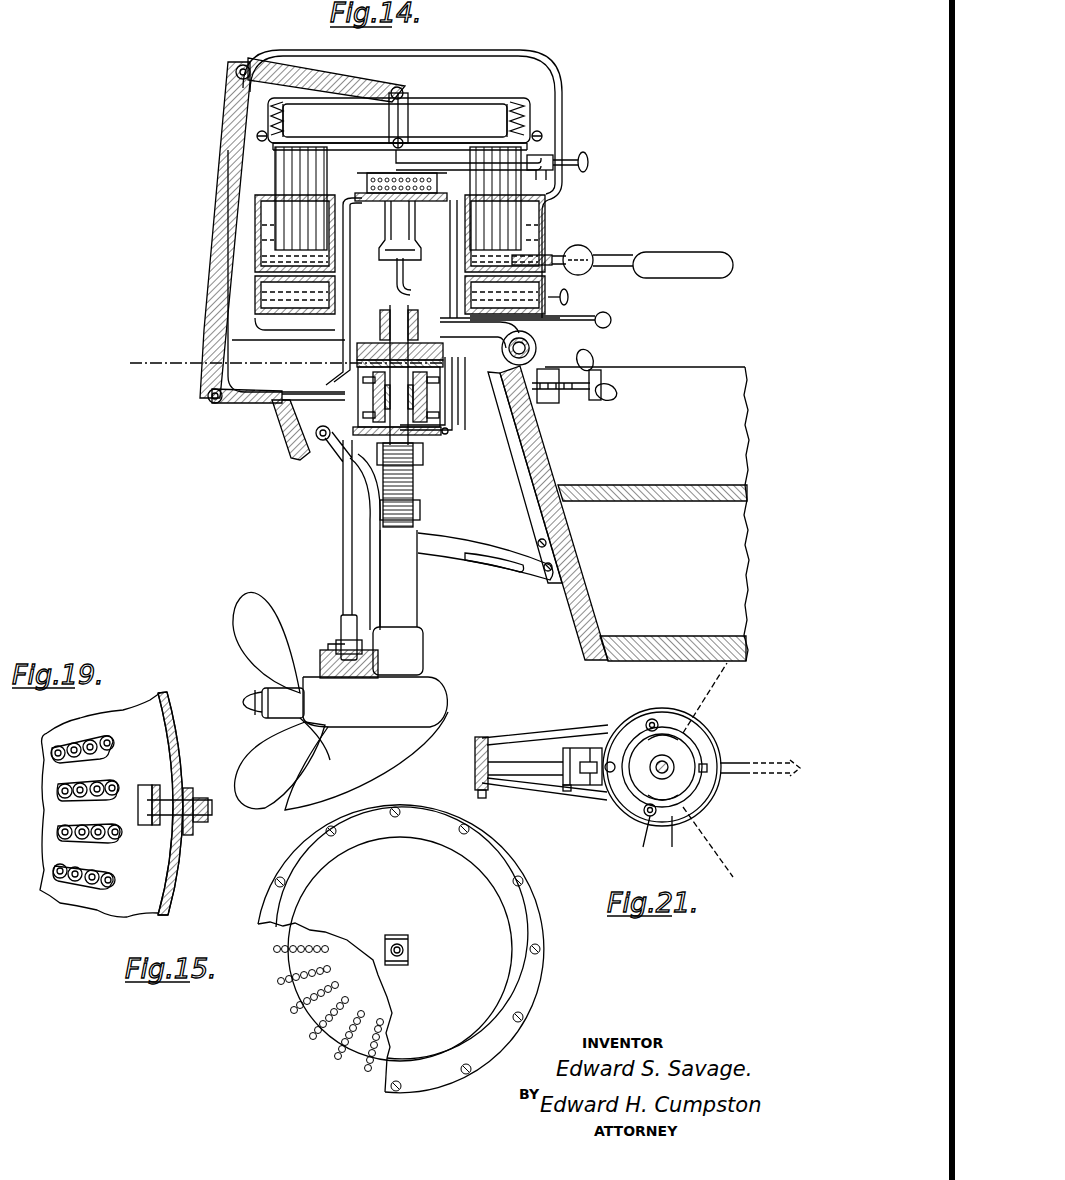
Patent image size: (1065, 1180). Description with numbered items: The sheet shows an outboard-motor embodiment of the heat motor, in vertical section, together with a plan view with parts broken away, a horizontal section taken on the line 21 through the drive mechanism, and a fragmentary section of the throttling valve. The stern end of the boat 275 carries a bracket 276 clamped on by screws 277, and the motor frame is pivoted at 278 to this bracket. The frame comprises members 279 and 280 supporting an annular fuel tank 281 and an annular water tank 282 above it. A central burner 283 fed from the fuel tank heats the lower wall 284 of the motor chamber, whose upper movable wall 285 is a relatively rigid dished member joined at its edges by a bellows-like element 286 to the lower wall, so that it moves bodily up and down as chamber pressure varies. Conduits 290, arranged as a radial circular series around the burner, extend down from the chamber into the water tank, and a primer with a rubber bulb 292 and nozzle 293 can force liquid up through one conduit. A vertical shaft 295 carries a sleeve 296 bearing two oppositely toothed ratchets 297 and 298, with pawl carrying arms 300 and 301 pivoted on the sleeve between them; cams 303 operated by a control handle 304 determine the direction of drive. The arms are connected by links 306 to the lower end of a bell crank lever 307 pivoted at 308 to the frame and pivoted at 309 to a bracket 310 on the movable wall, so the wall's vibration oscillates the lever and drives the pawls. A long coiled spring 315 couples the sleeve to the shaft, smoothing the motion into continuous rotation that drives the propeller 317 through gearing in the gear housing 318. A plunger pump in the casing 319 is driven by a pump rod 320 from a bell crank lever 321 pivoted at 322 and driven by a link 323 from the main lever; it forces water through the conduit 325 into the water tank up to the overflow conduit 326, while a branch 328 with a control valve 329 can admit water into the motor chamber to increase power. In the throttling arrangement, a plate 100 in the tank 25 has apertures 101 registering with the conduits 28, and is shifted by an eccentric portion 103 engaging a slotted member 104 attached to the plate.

In FIG. 14, the section line 21— 21 is at (137, 370).
In FIG. 19, the liquid tank 25 is at (177, 736).
In FIG. 19, the conduits 28 is at (118, 783).
In FIG. 19, the plate 100 is at (90, 903).
In FIG. 19, the apertures 101 is at (95, 816).
In FIG. 19, the eccentric portion 103 is at (148, 806).
In FIG. 19, the member 104 is at (160, 823).
In FIG. 14, the stern end of boat 275 is at (598, 561).
In FIG. 14, the bracket 276 is at (515, 469).
In FIG. 14, the screws 277 is at (577, 398).
In FIG. 14, the pivot 278 is at (538, 347).
In FIG. 14, the frame member 279 is at (500, 336).
In FIG. 14, the frame member 280 is at (295, 329).
In FIG. 14, the fuel tank 281 is at (255, 297).
In FIG. 14, the water tank 282 is at (255, 243).
In FIG. 14, the burner 283 is at (437, 187).
In FIG. 14, the lower wall 284 is at (343, 150).
In FIG. 14, the movable wall 285 is at (432, 142).
In FIG. 15, the movable wall 285 is at (401, 949).
In FIG. 14, the bellows-like element 286 is at (530, 115).
In FIG. 14, the conduits 290 is at (327, 181).
In FIG. 15, the conduits 290 is at (360, 1010).
In FIG. 14, the rubber bulb 292 is at (592, 251).
In FIG. 14, the nozzle 293 is at (540, 256).
In FIG. 14, the vertical shaft 295 is at (414, 306).
In FIG. 21, the vertical shaft 295 is at (673, 760).
In FIG. 14, the sleeve 296 is at (438, 437).
In FIG. 14, the ratchet 297 is at (372, 380).
In FIG. 21, the ratchet 297 is at (690, 782).
In FIG. 14, the ratchet 298 is at (448, 415).
In FIG. 14, the pawl carrying arm 300 is at (418, 397).
In FIG. 21, the pawl carrying arm 300 is at (708, 810).
In FIG. 14, the pawl carrying arm 301 is at (365, 403).
In FIG. 21, the pawl carrying arm 301 is at (652, 718).
In FIG. 14, the cams 303 is at (400, 368).
In FIG. 21, the cams 303 is at (684, 734).
In FIG. 14, the control handle 304 is at (578, 317).
In FIG. 21, the control handle 304 is at (749, 757).
In FIG. 14, the links 306 is at (294, 401).
In FIG. 21, the links 306 is at (540, 727).
In FIG. 14, the bell crank lever 307 is at (337, 80).
In FIG. 21, the bell crank lever 307 is at (475, 763).
In FIG. 14, the pivot 308 is at (238, 76).
In FIG. 14, the pivot 309 is at (405, 91).
In FIG. 14, the bracket 310 is at (389, 118).
In FIG. 15, the bracket 310 is at (405, 936).
In FIG. 14, the coiled spring 315 is at (414, 497).
In FIG. 14, the propeller 317 is at (237, 628).
In FIG. 14, the gear housing 318 is at (366, 743).
In FIG. 14, the pump casing 319 is at (348, 655).
In FIG. 14, the handle / pump rod 320 is at (667, 253).
In FIG. 21, the handle / pump rod 320 is at (588, 760).
In FIG. 14, the bell crank lever 321 is at (280, 437).
In FIG. 14, the pivot 322 is at (317, 438).
In FIG. 21, the pivot 322 is at (568, 791).
In FIG. 14, the link 323 is at (243, 405).
In FIG. 21, the link 323 is at (493, 766).
In FIG. 14, the conduit 325 is at (422, 217).
In FIG. 14, the overflow conduit 326 is at (341, 330).
In FIG. 14, the branch conduit 328 is at (420, 165).
In FIG. 14, the control valve 329 is at (540, 160).